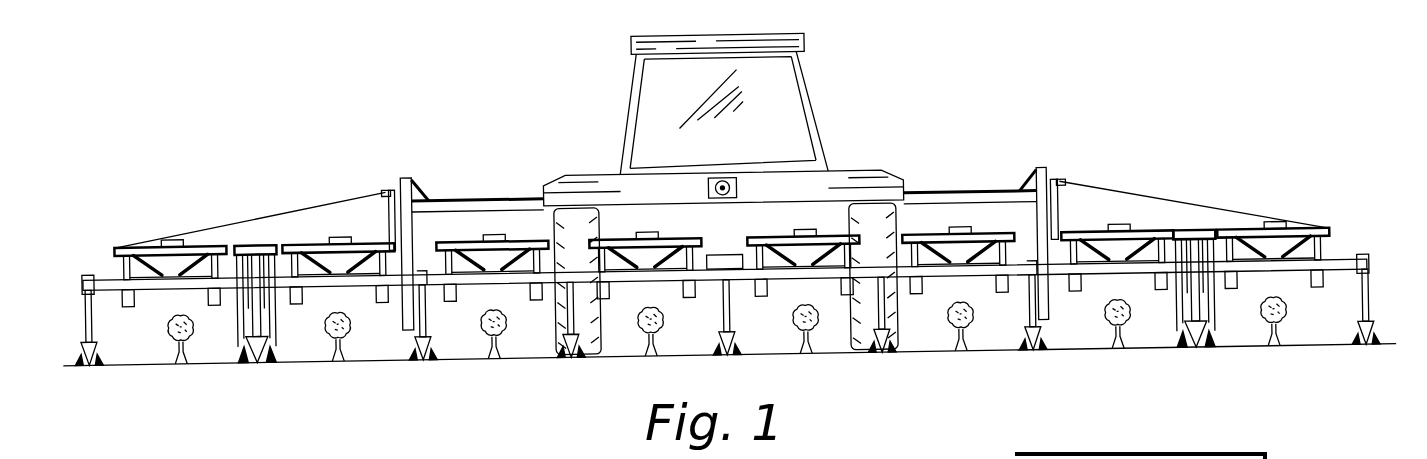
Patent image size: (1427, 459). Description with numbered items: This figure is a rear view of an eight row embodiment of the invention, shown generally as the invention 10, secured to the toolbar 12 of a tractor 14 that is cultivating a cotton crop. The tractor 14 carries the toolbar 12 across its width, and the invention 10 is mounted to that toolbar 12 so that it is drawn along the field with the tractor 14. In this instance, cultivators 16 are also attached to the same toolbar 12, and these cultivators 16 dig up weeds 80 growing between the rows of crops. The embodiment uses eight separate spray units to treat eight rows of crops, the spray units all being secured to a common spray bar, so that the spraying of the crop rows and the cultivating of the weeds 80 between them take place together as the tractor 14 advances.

The invention 10 is at (940, 156).
The toolbar 12 is at (1346, 266).
The tractor 14 is at (807, 37).
The cultivators 16 is at (1367, 309).
The weeds 80 is at (1378, 355).